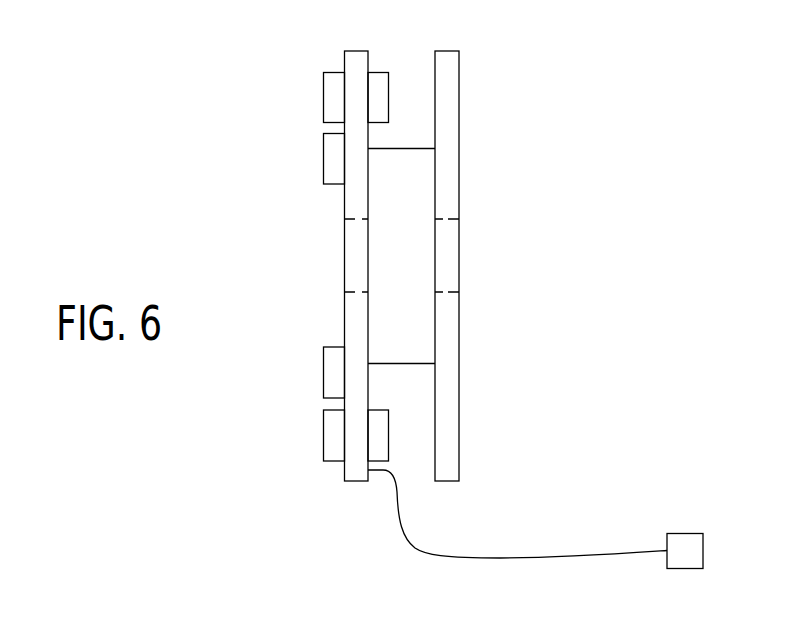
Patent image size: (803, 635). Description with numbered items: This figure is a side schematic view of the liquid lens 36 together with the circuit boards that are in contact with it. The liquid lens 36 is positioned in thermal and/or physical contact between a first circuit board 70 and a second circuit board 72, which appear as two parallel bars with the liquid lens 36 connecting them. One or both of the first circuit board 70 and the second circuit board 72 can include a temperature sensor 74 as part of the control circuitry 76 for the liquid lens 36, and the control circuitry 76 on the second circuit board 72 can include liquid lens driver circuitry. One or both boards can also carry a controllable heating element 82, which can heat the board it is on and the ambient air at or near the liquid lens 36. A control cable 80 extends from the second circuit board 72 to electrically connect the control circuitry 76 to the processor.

The liquid lens 36 is at (410, 165).
The first circuit board 70 is at (450, 51).
The second circuit board 72 is at (355, 51).
The temperature sensor 74 is at (388, 90).
The control circuitry 76 is at (324, 95).
The control cable 80 is at (593, 553).
The heating element 82 is at (388, 435).